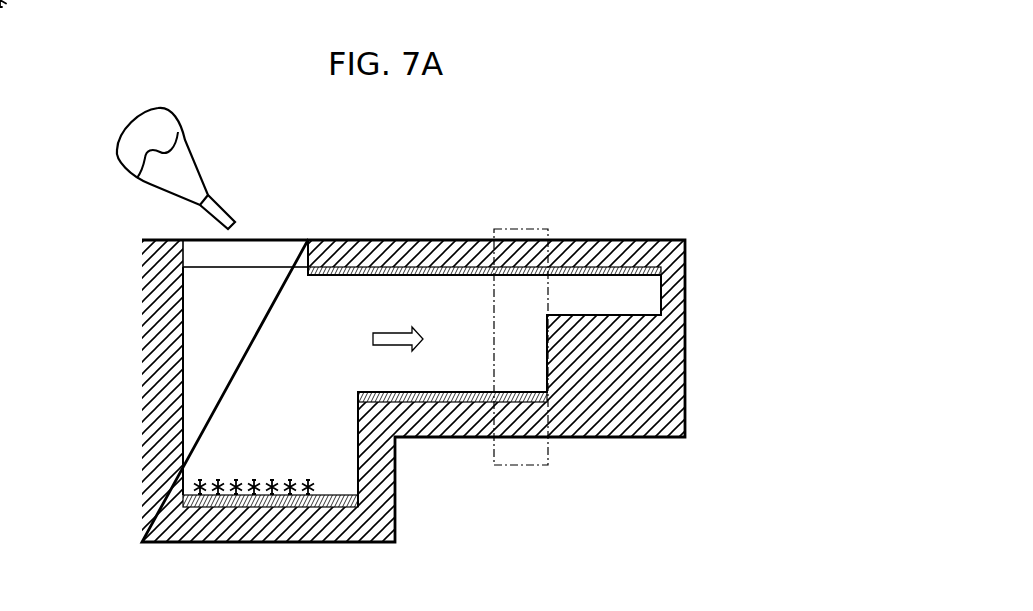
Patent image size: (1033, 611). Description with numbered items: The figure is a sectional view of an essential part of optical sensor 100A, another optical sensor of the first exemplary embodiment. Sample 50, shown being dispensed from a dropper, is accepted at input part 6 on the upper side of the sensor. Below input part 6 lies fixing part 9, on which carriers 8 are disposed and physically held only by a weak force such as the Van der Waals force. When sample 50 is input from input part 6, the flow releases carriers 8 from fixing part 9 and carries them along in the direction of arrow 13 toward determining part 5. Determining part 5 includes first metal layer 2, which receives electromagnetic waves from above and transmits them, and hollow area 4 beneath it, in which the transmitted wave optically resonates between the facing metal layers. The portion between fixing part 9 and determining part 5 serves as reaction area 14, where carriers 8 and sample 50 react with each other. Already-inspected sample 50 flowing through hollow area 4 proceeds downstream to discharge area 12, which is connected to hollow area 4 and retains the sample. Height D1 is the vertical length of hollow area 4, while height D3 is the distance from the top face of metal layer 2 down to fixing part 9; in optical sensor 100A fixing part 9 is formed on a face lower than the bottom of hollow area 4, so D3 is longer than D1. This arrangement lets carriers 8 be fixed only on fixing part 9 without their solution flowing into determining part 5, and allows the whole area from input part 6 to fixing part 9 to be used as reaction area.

The optical sensor 100A is at (683, 150).
The first metal layer 2 is at (342, 245).
The hollow area 4 is at (519, 318).
The determining part 5 is at (535, 467).
The input part 6 is at (275, 262).
The carrier 8 is at (195, 507).
The fixing part 9 is at (295, 507).
The discharge area 12 is at (620, 295).
The arrow 13 is at (390, 333).
The reaction area 14 is at (391, 368).
The sample 50 is at (193, 157).
The height of hollow area D1 is at (358, 391).
The height from top face of first metal layer to fixing part D3 is at (183, 495).